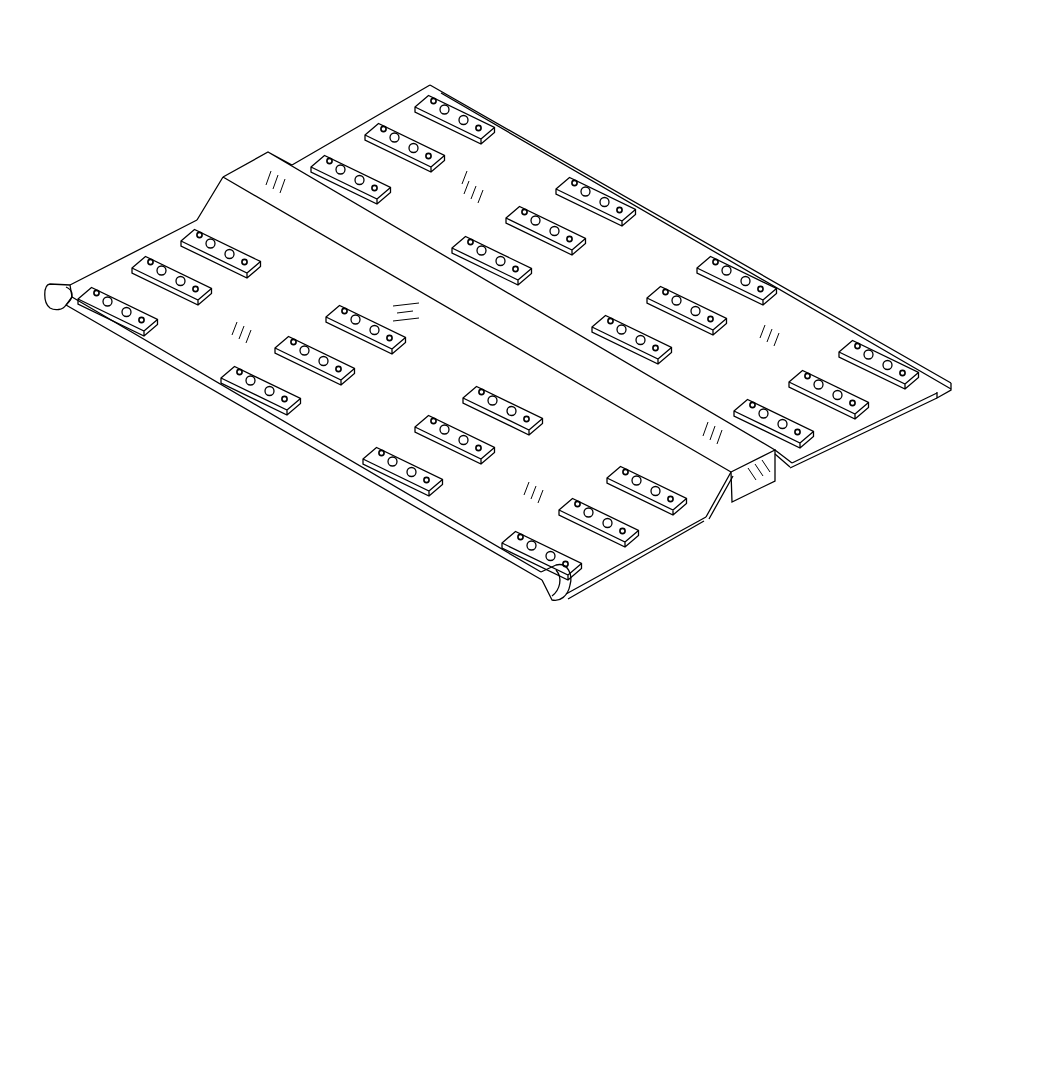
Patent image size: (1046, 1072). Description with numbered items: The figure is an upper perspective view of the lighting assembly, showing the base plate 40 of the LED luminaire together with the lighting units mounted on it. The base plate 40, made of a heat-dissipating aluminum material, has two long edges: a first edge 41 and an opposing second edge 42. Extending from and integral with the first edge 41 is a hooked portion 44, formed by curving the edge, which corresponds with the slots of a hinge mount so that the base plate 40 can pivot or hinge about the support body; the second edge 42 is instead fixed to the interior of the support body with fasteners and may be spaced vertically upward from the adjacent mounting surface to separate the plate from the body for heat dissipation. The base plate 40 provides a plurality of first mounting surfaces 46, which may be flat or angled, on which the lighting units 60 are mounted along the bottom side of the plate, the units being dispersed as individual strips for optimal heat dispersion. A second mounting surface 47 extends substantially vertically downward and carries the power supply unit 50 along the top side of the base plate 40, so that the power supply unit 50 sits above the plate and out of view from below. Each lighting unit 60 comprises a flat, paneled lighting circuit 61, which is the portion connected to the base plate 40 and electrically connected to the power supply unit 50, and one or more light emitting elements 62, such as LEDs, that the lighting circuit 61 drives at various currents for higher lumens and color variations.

The base plate 40 is at (334, 117).
The first edge 41 is at (510, 342).
The second edge 42 is at (947, 383).
The hooked portion 44 is at (50, 286).
The first mounting surface 46 is at (583, 549).
The second mounting surface 47 is at (719, 503).
The power supply unit 50 is at (752, 493).
The lighting unit 60 is at (623, 114).
The lighting circuit 61 is at (597, 196).
The light emitting element 62 is at (585, 190).